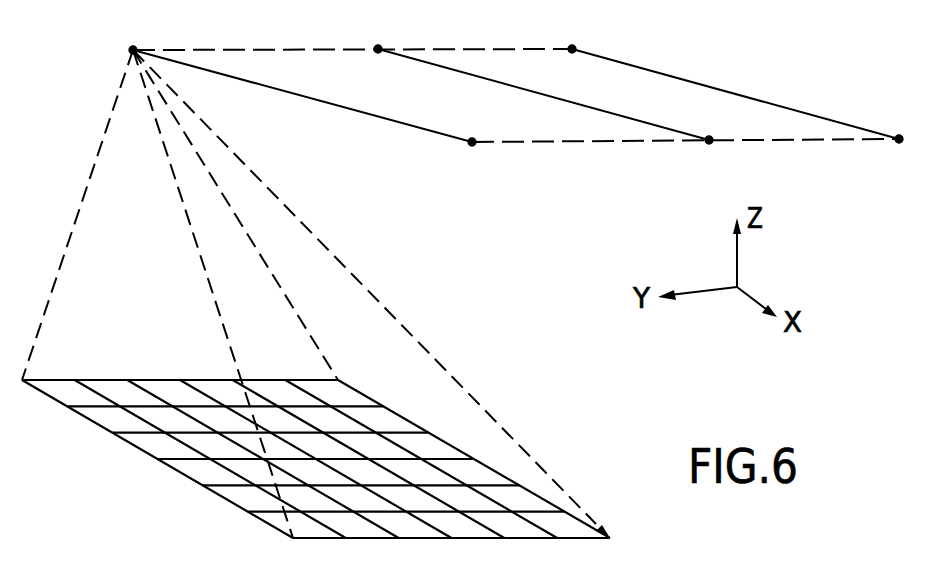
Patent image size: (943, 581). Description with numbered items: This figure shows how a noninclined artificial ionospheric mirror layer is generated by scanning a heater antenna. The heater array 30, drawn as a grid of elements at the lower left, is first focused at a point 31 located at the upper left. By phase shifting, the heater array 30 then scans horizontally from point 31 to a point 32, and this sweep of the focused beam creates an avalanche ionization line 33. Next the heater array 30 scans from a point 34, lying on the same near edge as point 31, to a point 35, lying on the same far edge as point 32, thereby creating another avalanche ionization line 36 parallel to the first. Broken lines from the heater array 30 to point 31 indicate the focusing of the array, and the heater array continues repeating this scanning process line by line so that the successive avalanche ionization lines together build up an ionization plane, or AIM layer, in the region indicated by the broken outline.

The heater array 30 is at (611, 538).
The point 31 is at (133, 50).
The point 32 is at (473, 143).
The avalanche ionization line 33 is at (297, 96).
The point 34 is at (378, 49).
The point 35 is at (710, 141).
The avalanche ionization line 36 is at (522, 91).